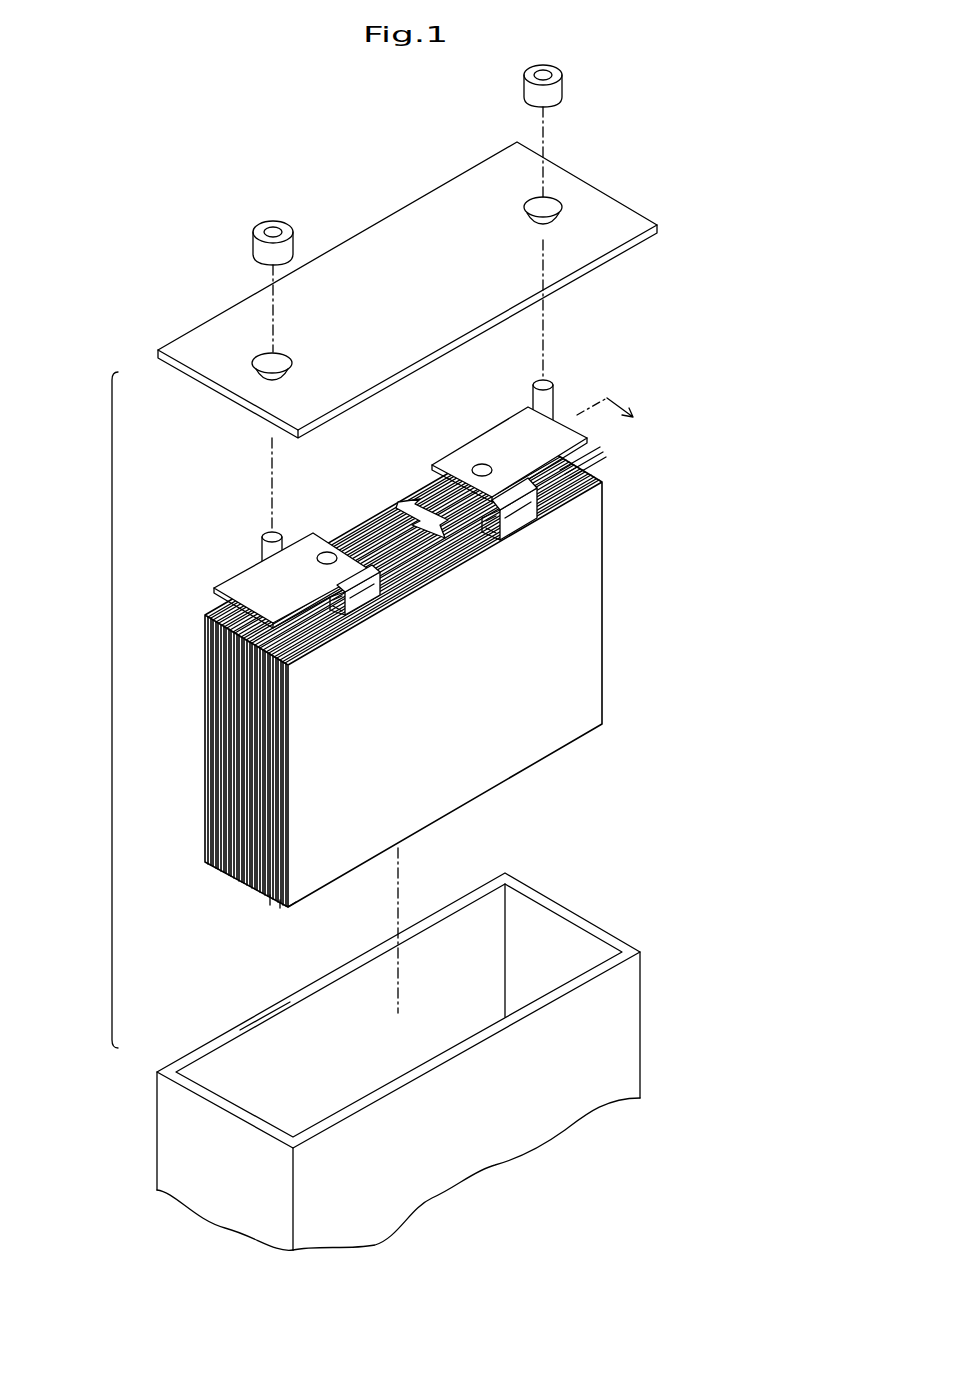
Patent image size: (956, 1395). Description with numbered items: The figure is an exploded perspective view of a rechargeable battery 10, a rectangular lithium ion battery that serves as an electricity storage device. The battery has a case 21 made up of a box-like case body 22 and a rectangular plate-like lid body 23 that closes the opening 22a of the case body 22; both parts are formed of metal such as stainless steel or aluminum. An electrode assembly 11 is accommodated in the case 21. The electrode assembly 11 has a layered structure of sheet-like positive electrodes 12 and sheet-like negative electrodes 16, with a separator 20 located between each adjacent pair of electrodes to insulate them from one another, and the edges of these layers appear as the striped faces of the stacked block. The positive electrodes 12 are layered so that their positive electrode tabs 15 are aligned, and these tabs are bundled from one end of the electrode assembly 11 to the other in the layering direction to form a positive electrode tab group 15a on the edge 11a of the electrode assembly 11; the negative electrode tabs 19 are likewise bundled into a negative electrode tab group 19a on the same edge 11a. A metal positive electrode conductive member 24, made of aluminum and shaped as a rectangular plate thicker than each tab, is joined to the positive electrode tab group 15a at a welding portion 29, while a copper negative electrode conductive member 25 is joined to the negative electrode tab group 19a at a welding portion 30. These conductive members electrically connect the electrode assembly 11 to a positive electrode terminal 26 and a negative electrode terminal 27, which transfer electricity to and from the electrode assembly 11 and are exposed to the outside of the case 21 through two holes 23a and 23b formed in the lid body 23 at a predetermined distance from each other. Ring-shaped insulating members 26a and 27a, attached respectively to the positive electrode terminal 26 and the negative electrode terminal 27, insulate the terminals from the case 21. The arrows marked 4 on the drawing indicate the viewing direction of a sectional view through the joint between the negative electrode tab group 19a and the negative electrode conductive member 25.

The rechargeable battery 10 is at (145, 115).
The electrode assembly 11 is at (603, 690).
The edge of the electrode assembly 11a is at (592, 470).
The positive electrode 12 is at (288, 907).
The positive electrode tab 15 is at (366, 600).
The positive electrode tab group 15a is at (334, 608).
The negative electrode 16 is at (276, 902).
The negative electrode tab 19 is at (520, 504).
The negative electrode tab group 19a is at (488, 525).
The separator 20 is at (286, 906).
The case 21 is at (95, 710).
The case body 22 is at (192, 1052).
The opening of the case body 22a is at (262, 1028).
The lid body 23 is at (170, 370).
The hole 23a is at (285, 369).
The hole 23b is at (556, 213).
The positive electrode conductive member 24 is at (298, 552).
The negative electrode conductive member 25 is at (490, 435).
The positive electrode terminal 26 is at (264, 556).
The insulating member 26a is at (292, 228).
The negative electrode terminal 27 is at (549, 383).
The insulating member 27a is at (563, 72).
The welding portion 29 is at (328, 552).
The welding portion 30 is at (472, 468).
The section line IV-IV 4 is at (526, 474).